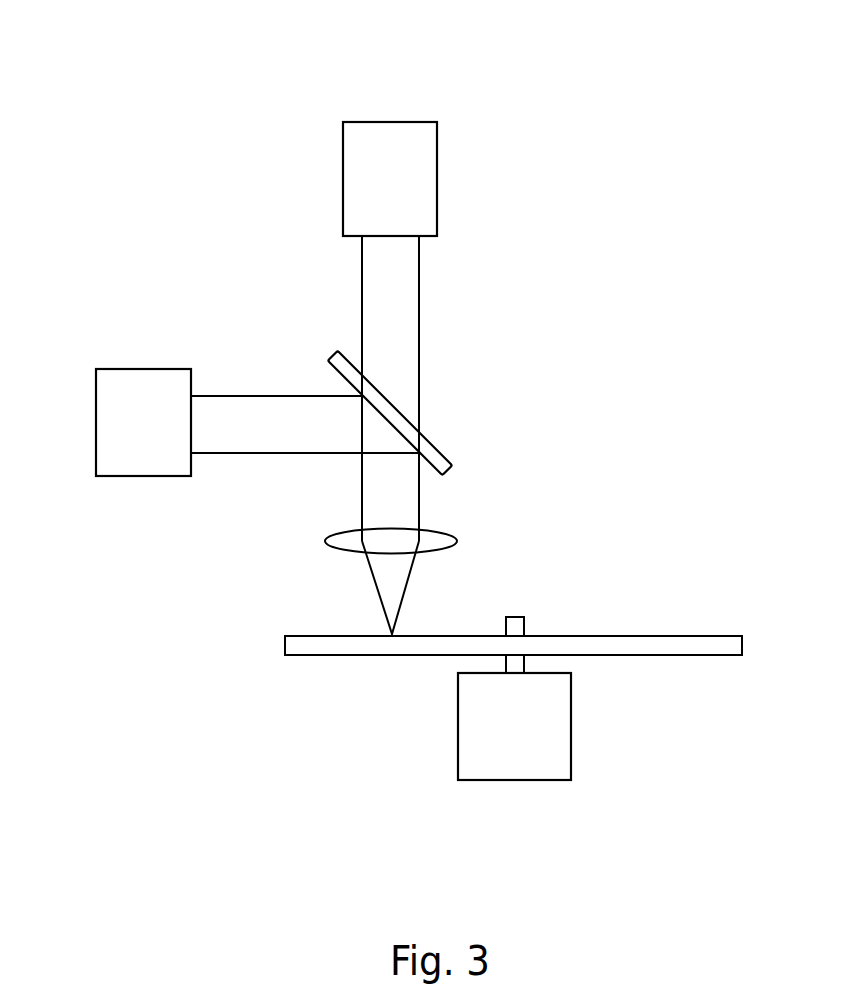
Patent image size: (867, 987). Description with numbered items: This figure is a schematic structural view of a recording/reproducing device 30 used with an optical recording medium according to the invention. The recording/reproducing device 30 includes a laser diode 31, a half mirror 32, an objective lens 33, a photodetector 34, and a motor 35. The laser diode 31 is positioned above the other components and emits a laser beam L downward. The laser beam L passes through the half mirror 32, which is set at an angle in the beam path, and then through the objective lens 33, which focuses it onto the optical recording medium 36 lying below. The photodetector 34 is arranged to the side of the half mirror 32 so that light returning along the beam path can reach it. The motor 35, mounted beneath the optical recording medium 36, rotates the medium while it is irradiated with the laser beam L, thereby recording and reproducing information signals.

The recording/reproducing device 30 is at (110, 102).
The laser diode 31 is at (409, 122).
The laser beam L is at (420, 313).
The half mirror 32 is at (438, 448).
The objective lens 33 is at (448, 535).
The photodetector 34 is at (152, 369).
The motor 35 is at (571, 753).
The optical recording medium 36 is at (715, 636).